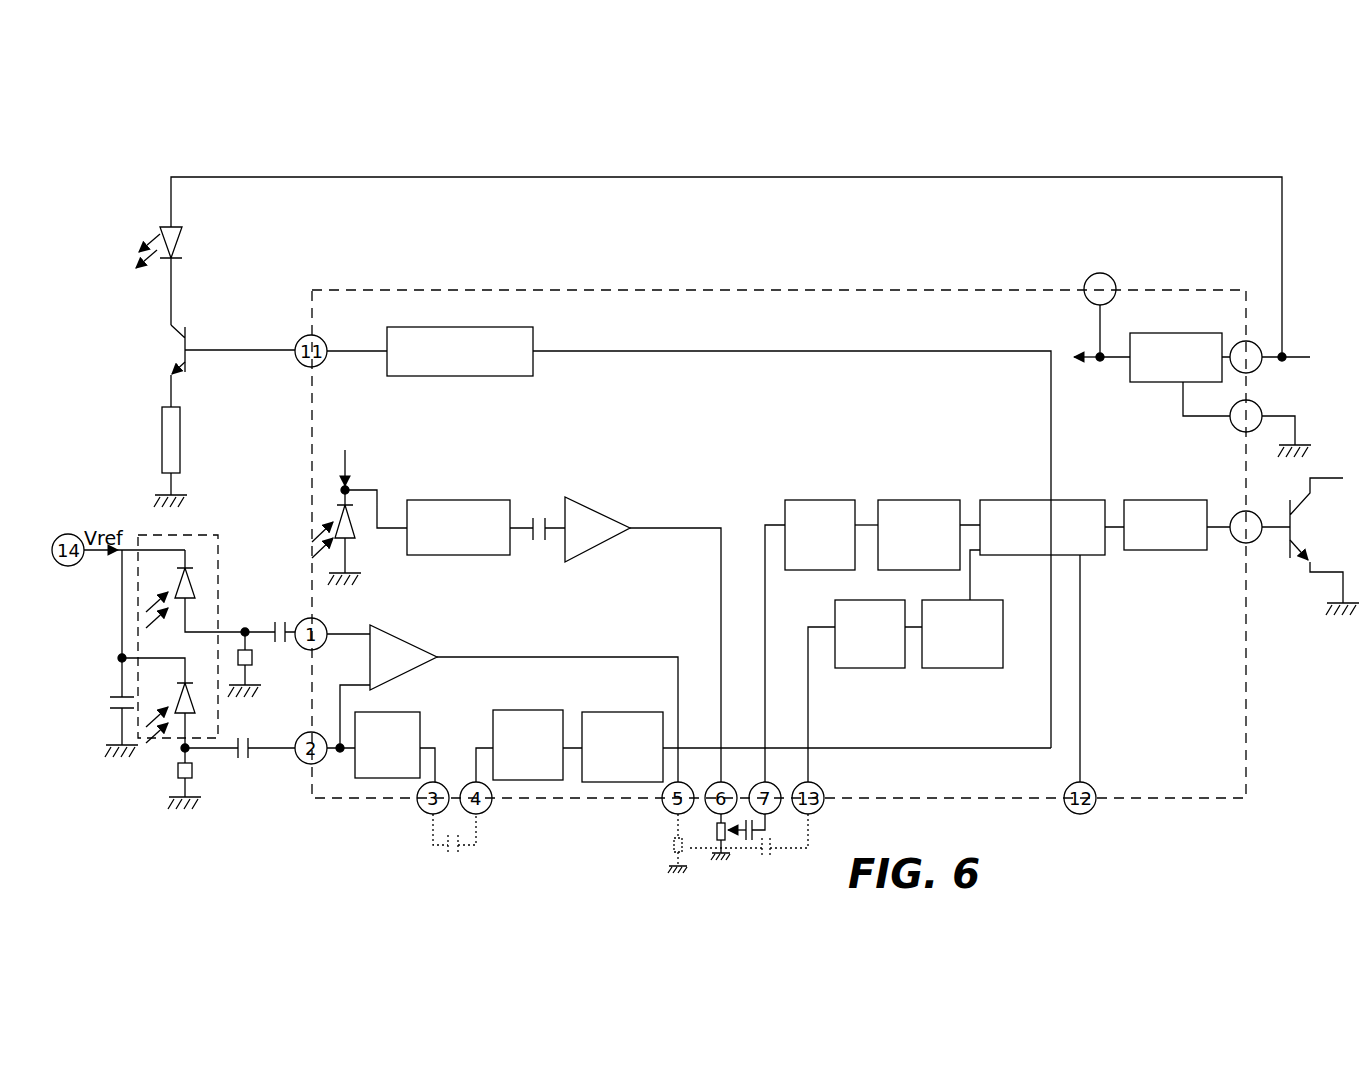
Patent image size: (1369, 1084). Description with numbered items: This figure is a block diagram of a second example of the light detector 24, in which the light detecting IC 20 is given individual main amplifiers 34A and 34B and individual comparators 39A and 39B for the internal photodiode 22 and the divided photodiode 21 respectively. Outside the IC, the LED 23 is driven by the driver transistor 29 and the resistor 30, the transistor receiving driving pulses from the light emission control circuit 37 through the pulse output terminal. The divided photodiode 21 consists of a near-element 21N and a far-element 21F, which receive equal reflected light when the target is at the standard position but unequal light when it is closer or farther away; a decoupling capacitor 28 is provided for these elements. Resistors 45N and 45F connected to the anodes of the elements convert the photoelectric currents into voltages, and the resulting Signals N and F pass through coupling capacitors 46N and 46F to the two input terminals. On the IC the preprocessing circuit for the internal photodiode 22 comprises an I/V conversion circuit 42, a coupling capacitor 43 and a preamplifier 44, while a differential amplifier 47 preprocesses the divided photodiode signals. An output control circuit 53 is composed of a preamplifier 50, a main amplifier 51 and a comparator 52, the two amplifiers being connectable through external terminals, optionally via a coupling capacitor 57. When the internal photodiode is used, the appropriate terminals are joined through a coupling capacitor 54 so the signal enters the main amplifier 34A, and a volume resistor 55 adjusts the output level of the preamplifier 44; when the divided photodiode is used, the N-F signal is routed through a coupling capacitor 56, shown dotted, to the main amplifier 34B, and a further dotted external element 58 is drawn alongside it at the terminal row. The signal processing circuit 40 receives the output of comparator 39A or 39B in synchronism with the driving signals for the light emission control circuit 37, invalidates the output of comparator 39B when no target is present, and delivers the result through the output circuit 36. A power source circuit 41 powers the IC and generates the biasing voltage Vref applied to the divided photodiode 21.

The light detecting IC 20 is at (996, 288).
The divided photodiode 21 is at (207, 535).
The near-element 21N is at (196, 592).
The far-element 21F is at (196, 701).
The internal photodiode 22 is at (356, 530).
The LED 23 is at (165, 229).
The light detector 24 is at (739, 178).
The decoupling capacitor 28 is at (118, 695).
The driver transistor 29 is at (178, 344).
The resistor 30 is at (162, 425).
The main amplifier 34A is at (840, 500).
The main amplifier 34B is at (852, 600).
The output circuit 36 is at (1172, 500).
The light emission control circuit 37 is at (505, 377).
The comparator 39A is at (940, 500).
The comparator 39B is at (940, 600).
The signal processing circuit 40 is at (1015, 500).
The power source circuit 41 is at (1190, 318).
The I/V conversion circuit 42 is at (465, 500).
The coupling capacitor 43 is at (540, 518).
The preamplifier 44 is at (592, 506).
The resistor 45N is at (253, 660).
The resistor 45F is at (196, 778).
The coupling capacitor 46N is at (276, 624).
The coupling capacitor 46F is at (250, 768).
The differential amplifier 47 is at (400, 636).
The preamplifier 50 is at (405, 712).
The main amplifier 51 is at (510, 710).
The comparator 52 is at (640, 712).
The output control circuit 53 is at (520, 784).
The coupling capacitor 54 is at (751, 842).
The volume resistor 55 is at (722, 843).
The coupling capacitor 56 is at (772, 858).
The coupling capacitor 57 is at (446, 852).
The resistor 58 is at (674, 855).